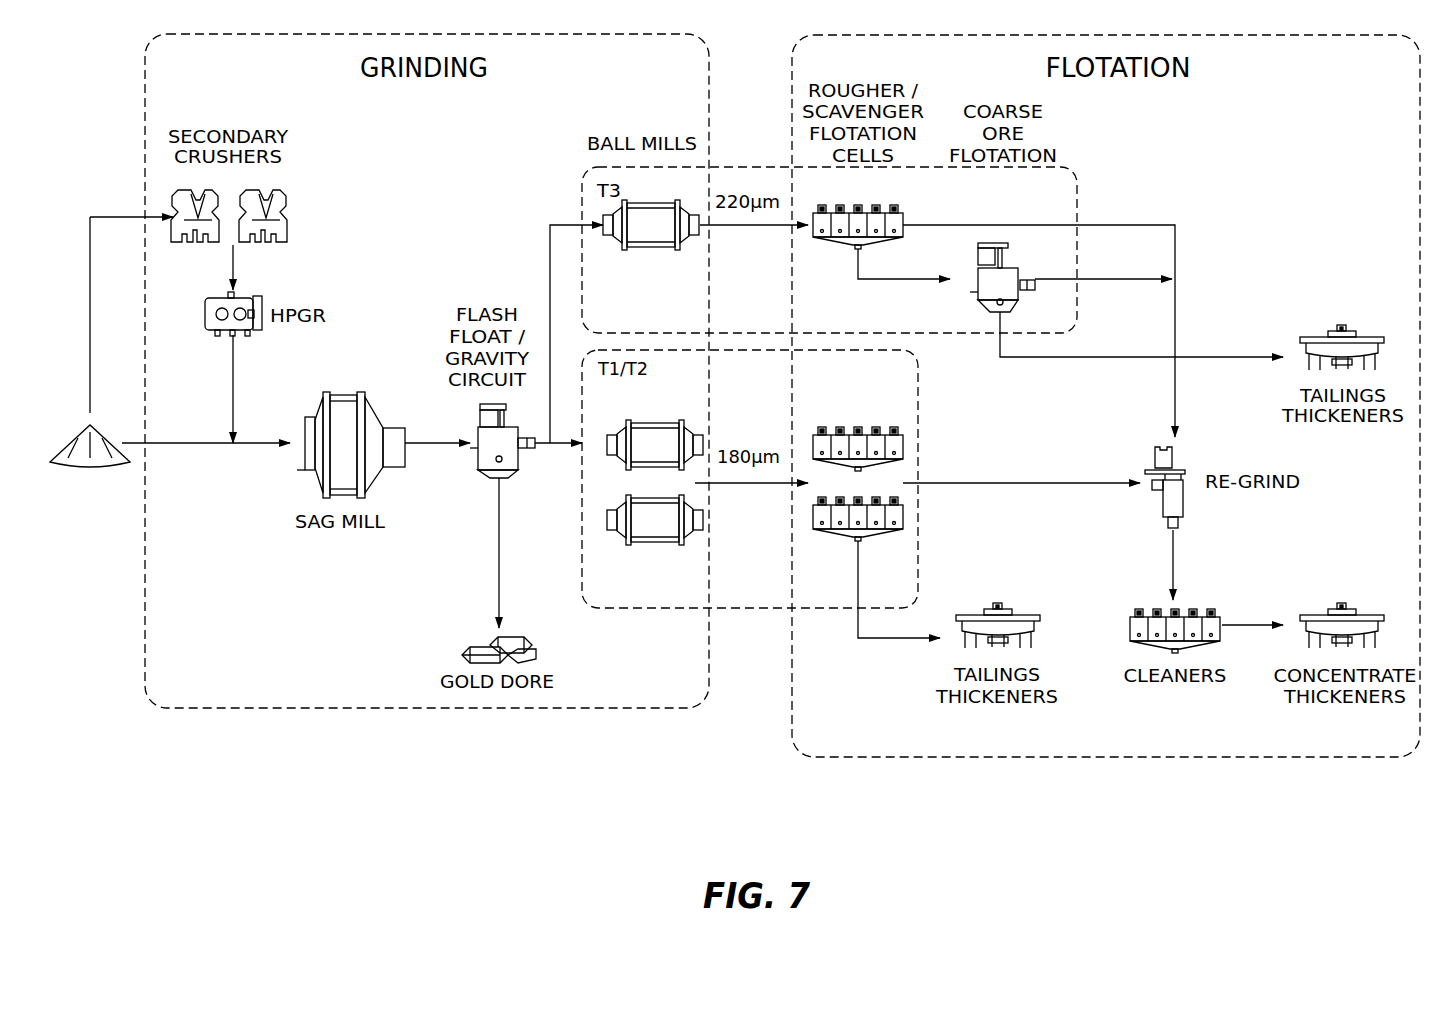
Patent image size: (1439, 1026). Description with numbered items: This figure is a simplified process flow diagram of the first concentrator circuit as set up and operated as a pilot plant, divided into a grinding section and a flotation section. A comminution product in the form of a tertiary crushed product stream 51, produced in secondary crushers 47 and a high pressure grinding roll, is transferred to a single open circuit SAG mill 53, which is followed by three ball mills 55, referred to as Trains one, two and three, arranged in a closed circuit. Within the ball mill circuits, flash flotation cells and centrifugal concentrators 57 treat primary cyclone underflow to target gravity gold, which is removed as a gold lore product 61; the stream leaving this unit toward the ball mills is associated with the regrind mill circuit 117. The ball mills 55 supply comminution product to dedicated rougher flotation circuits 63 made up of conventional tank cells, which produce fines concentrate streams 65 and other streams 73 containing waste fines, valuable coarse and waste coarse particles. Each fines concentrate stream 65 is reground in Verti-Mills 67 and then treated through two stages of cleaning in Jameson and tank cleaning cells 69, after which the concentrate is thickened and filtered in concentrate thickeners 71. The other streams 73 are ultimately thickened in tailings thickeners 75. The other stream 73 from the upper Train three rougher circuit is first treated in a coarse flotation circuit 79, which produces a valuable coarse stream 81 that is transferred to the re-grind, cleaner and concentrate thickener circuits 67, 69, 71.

The crushers 47 is at (172, 200).
The tertiary crushed product stream 51 is at (248, 446).
The SAG mill 53 is at (380, 480).
The ball mills 55 is at (652, 250).
The flash flotation cells and centrifugal concentrators 57 is at (470, 438).
The gold lore product 61 is at (466, 650).
The rougher flotation circuits 63 is at (905, 218).
The fines concentrate stream 65 is at (1127, 223).
The Verti-Mills 67 is at (1180, 505).
The cleaning cells 69 is at (1225, 615).
The concentrate thickeners 71 is at (1362, 612).
The other stream 73 is at (900, 280).
The tailings thickeners 75 is at (1316, 334).
The coarse flotation circuit 79 is at (1018, 300).
The valuable coarse stream 81 is at (1098, 278).
The regrind mill circuit 117 is at (553, 455).